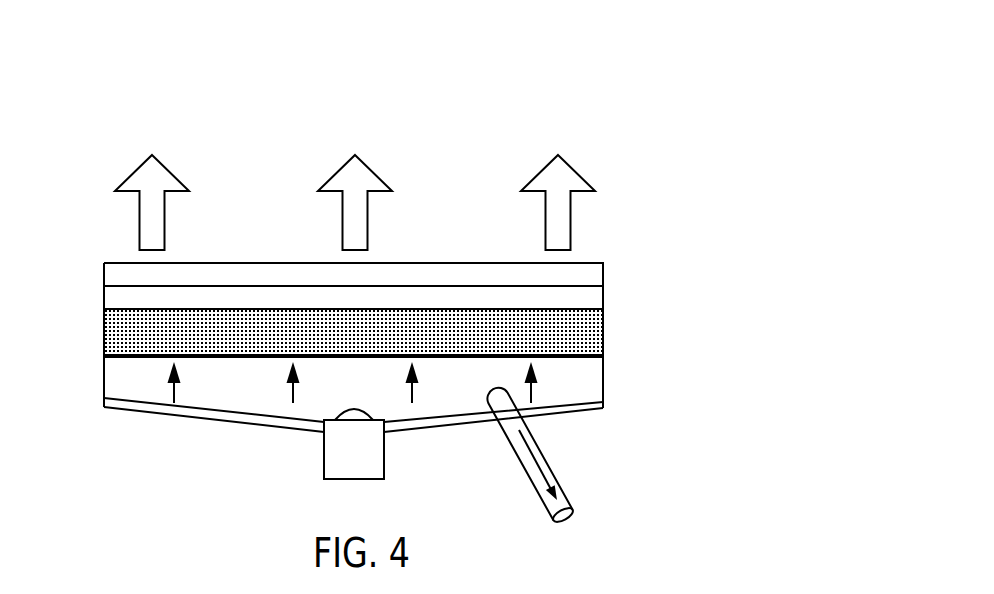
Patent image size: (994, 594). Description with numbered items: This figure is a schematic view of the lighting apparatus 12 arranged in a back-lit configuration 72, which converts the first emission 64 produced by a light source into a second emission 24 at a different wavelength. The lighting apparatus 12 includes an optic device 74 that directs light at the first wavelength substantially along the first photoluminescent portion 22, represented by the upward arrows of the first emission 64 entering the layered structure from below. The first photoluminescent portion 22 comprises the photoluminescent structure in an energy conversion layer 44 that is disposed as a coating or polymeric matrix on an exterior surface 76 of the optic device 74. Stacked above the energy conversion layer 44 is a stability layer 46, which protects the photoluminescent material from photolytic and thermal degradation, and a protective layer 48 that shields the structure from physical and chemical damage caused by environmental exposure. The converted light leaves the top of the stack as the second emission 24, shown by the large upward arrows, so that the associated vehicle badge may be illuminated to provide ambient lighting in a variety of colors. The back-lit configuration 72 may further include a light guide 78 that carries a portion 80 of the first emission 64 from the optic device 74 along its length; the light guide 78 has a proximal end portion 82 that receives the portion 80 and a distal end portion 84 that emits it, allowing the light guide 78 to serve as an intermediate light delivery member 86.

The lighting apparatus 12 is at (141, 70).
The back-lit configuration 72 is at (591, 91).
The second emission 24 is at (155, 211).
The first photoluminescent portion 22 is at (106, 326).
The protective layer 48 is at (592, 276).
The stability layer 46 is at (593, 300).
The energy conversion layer 44 is at (592, 332).
The exterior surface 76 is at (590, 357).
The optic device 74 is at (592, 391).
The first emission 64 is at (290, 388).
The light guide 78 is at (542, 450).
The portion of the first emission 80 is at (545, 469).
The proximal end portion 82 is at (526, 406).
The distal end portion 84 is at (588, 516).
The intermediate light delivery member 86 is at (515, 493).